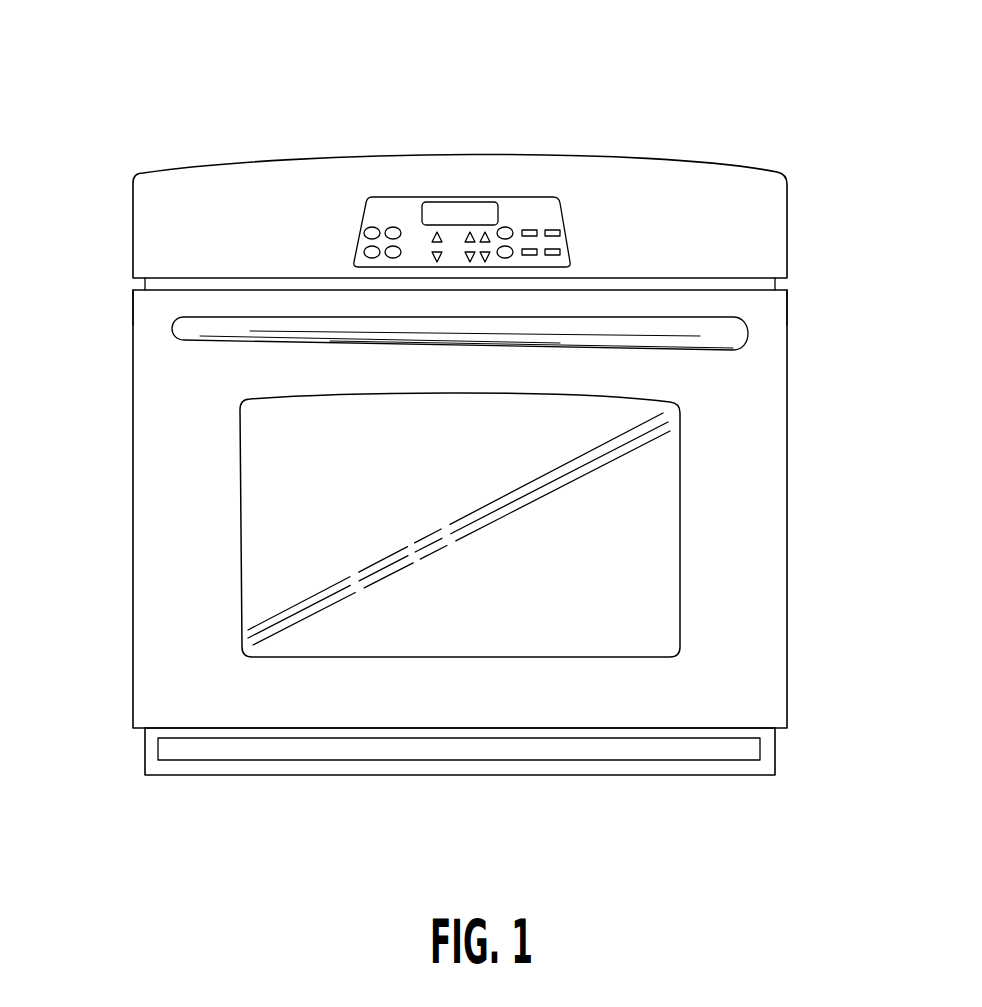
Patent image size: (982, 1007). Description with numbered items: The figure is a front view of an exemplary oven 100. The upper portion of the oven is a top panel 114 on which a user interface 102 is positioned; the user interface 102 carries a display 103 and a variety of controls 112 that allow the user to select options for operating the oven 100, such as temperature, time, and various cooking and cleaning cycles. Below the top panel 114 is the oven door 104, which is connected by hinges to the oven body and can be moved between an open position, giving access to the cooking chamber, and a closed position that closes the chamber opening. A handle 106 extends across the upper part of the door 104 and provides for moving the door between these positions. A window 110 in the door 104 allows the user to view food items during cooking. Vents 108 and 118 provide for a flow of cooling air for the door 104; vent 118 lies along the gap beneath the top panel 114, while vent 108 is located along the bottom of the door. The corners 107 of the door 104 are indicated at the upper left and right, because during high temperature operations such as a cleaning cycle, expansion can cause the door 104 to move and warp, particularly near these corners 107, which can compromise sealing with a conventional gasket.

The oven 100 is at (204, 82).
The user interface 102 is at (539, 212).
The display 103 is at (459, 210).
The oven door 104 is at (737, 460).
The handle 106 is at (728, 332).
The corners 107 is at (128, 303).
The vent 108 is at (697, 755).
The window 110 is at (663, 537).
The controls 112 is at (372, 230).
The top panel 114 is at (677, 187).
The vent 118 is at (815, 285).